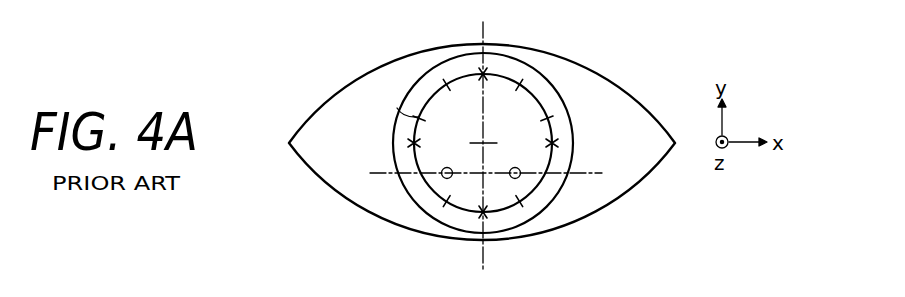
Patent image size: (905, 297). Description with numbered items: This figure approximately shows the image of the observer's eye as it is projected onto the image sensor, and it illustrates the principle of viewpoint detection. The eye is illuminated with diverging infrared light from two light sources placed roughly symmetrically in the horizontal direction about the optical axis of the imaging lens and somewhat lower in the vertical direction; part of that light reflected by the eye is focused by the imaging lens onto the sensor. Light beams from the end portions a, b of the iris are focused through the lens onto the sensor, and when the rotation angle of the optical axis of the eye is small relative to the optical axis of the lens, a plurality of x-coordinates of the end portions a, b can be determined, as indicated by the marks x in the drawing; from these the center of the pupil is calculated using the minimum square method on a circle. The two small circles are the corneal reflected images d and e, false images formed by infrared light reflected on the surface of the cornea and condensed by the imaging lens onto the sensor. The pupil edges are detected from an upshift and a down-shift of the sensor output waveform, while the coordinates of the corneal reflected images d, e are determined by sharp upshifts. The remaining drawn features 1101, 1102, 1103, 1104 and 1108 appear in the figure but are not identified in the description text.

The inner circular boundary 1101 is at (443, 101).
The annular zone 1102 is at (397, 108).
The optical center 1103 is at (483, 141).
The outer circular boundary 1104 is at (538, 73).
The lens outline 1108 is at (388, 133).
The end portion of the iris a is at (547, 200).
The end portion of the iris b is at (421, 174).
The corneal reflected image d is at (520, 177).
The corneal reflected image e is at (443, 178).